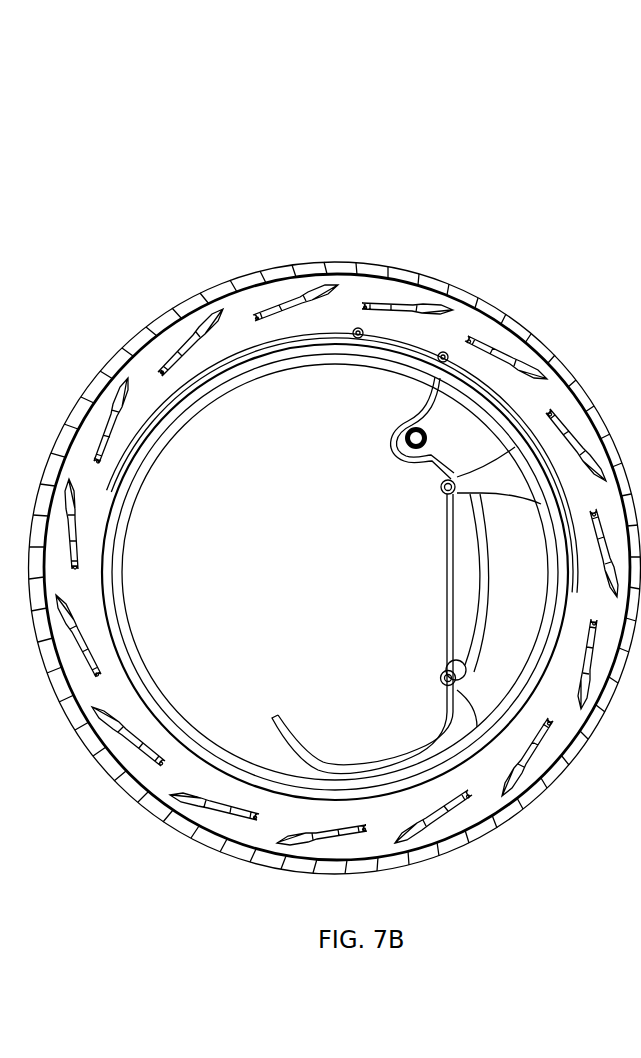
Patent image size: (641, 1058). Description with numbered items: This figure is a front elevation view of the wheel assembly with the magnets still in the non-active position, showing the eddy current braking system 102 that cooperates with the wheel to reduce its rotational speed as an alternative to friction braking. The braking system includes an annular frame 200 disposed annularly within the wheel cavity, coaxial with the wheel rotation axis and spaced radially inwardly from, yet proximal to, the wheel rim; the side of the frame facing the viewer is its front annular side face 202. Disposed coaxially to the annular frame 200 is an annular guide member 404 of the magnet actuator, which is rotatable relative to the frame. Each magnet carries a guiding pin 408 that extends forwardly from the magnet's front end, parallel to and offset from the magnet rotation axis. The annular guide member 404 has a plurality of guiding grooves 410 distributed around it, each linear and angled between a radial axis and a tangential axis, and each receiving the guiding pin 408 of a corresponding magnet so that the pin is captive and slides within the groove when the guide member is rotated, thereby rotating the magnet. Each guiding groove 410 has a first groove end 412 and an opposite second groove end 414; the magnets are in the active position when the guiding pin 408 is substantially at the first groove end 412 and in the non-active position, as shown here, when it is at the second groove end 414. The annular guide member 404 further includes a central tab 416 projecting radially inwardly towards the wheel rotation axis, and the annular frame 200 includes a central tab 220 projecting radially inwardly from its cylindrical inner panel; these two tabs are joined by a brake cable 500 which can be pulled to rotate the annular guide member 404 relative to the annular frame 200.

The eddy current braking system 102 is at (497, 213).
The annular frame 200 is at (568, 362).
The front annular side face 202 is at (312, 268).
The annular guide member 404 is at (368, 275).
The guiding pin 408 is at (253, 317).
The guiding groove 410 is at (192, 347).
The first groove end 412 is at (130, 440).
The second groove end 414 is at (225, 310).
The central tab 220 is at (452, 437).
The central tab 416 is at (505, 485).
The brake cable 500 is at (447, 643).